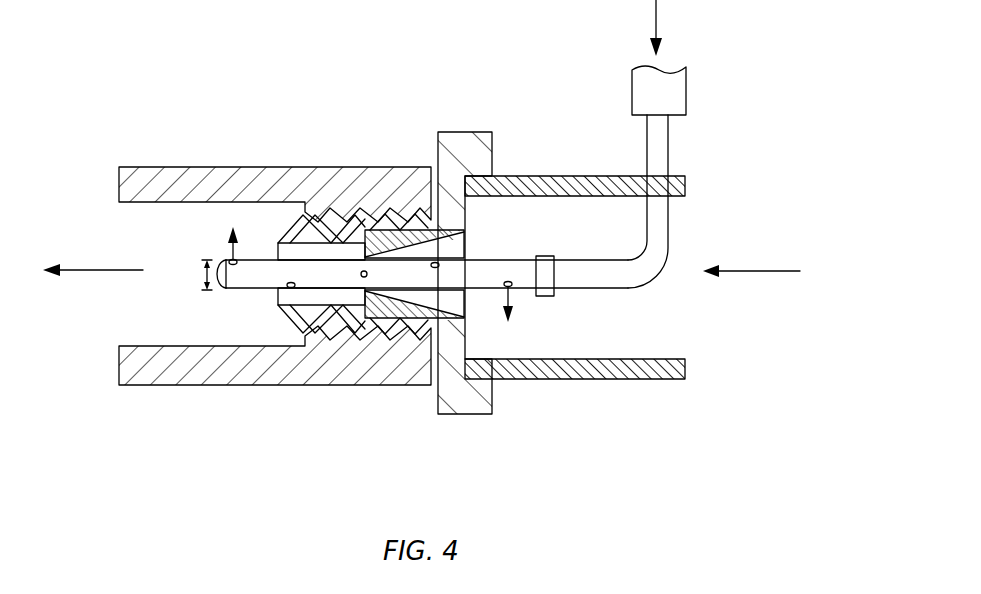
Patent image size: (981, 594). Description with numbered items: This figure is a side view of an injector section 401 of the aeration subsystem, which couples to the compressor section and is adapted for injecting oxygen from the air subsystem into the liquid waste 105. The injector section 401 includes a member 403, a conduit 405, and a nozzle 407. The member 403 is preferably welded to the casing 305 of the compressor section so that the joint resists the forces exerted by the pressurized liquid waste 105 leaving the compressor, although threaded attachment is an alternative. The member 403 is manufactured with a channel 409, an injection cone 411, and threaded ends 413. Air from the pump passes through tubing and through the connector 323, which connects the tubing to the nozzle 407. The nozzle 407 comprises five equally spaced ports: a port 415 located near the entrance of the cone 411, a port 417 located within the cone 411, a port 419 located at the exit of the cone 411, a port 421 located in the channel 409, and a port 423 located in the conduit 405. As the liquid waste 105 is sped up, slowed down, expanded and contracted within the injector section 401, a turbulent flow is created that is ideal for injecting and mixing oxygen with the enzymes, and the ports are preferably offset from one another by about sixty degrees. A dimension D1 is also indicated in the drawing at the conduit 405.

The injector section 401 is at (163, 100).
The member 403 is at (463, 415).
The conduit 405 is at (162, 385).
The nozzle 407 is at (525, 289).
The channel 409 is at (300, 232).
The injection cone 411 is at (398, 230).
The threaded ends 413 is at (334, 352).
The port 415 is at (509, 282).
The port 417 is at (438, 263).
The port 419 is at (365, 278).
The port 421 is at (291, 288).
The port 423 is at (231, 266).
The liquid waste 105 is at (757, 271).
The casing 305 is at (601, 380).
The connector 323 is at (687, 95).
The dimension D1 is at (202, 260).